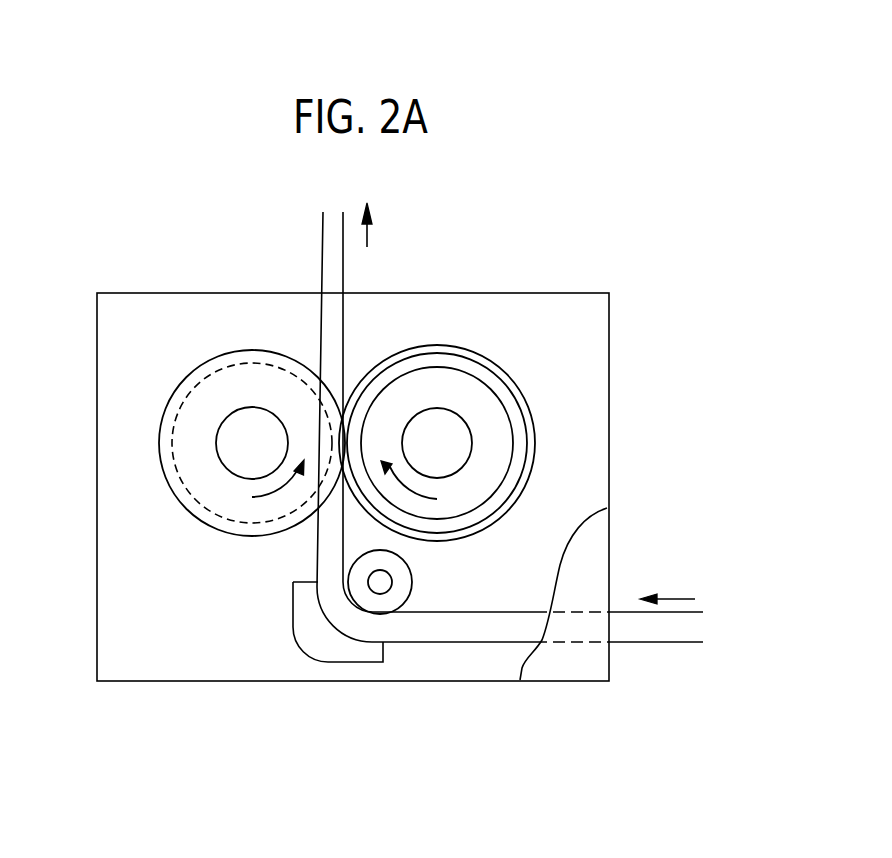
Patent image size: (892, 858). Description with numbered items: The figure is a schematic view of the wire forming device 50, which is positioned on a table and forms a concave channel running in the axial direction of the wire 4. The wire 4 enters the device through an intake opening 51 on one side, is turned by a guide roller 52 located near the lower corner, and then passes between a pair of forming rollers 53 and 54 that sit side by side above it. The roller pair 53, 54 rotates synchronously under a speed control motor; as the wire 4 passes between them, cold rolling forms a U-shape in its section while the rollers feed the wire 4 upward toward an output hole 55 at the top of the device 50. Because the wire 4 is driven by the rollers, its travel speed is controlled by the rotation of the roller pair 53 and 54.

The wire 4 is at (668, 623).
The wire forming device 50 is at (194, 672).
The intake opening 51 is at (610, 628).
The guide roller 52 is at (400, 588).
The forming roller 53 is at (218, 397).
The forming roller 54 is at (468, 370).
The output hole 55 is at (332, 292).